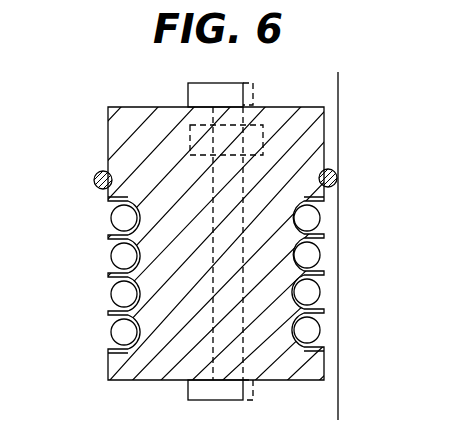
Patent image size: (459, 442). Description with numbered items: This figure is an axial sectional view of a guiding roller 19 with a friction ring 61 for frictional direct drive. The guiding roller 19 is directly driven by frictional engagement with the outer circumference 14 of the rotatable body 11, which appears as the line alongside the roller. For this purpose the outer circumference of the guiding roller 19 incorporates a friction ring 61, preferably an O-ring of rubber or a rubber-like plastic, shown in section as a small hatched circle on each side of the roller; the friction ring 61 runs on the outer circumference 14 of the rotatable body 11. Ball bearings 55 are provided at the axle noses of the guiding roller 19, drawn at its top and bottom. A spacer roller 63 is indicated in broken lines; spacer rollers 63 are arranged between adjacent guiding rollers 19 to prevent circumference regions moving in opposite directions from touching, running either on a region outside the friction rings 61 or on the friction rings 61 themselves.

The guiding roller 19 is at (123, 138).
The ball bearings 55 is at (190, 96).
The spacer rollers 63 is at (268, 122).
The friction ring 61 is at (96, 174).
The outer circumference 14 is at (338, 398).
The rotatable body 11 is at (378, 263).